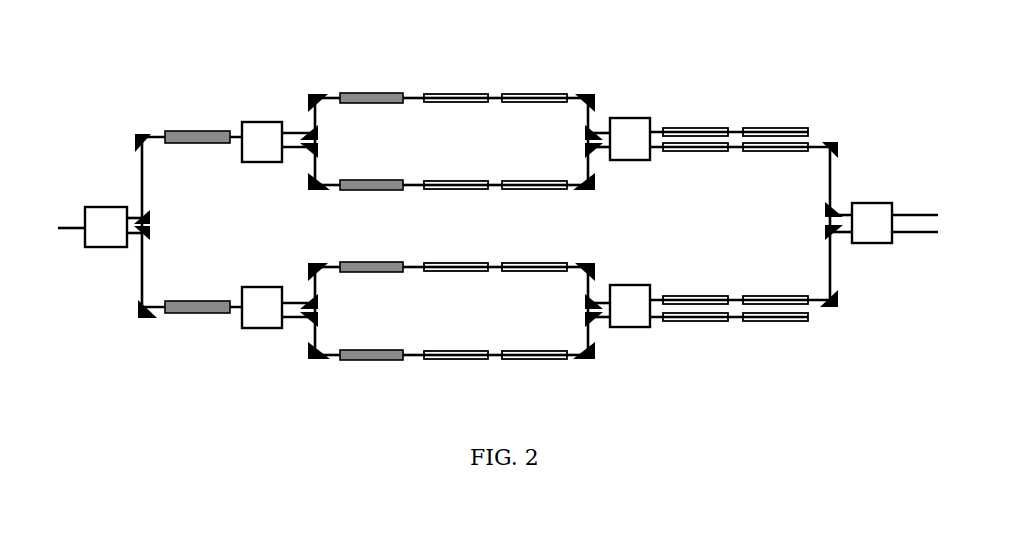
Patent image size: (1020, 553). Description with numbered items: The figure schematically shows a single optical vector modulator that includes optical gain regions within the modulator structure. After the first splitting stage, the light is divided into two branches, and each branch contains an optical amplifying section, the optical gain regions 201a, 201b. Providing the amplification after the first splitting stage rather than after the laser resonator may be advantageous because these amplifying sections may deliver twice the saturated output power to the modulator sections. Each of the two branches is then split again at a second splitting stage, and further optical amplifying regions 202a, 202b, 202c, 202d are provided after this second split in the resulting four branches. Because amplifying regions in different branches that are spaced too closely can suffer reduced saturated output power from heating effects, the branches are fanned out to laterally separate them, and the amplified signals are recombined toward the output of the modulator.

The optical gain region 201a is at (188, 130).
The optical gain region 201b is at (208, 302).
The optical gain region 202a is at (362, 94).
The optical gain region 202b is at (345, 181).
The optical gain region 202c is at (338, 263).
The optical gain region 202d is at (345, 351).